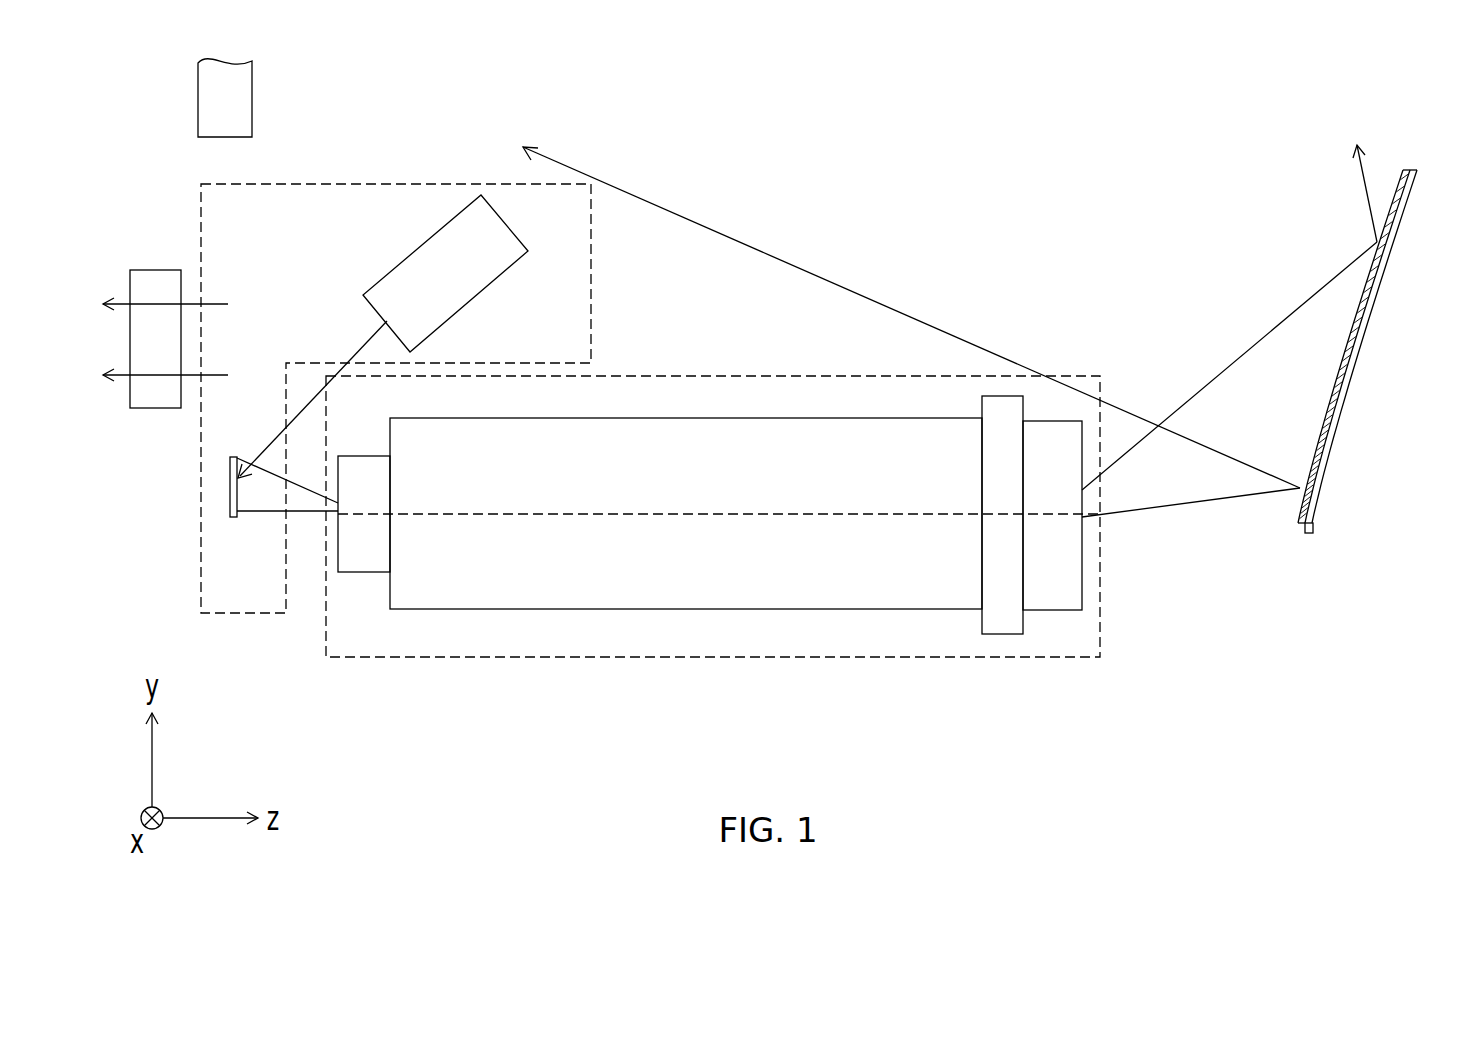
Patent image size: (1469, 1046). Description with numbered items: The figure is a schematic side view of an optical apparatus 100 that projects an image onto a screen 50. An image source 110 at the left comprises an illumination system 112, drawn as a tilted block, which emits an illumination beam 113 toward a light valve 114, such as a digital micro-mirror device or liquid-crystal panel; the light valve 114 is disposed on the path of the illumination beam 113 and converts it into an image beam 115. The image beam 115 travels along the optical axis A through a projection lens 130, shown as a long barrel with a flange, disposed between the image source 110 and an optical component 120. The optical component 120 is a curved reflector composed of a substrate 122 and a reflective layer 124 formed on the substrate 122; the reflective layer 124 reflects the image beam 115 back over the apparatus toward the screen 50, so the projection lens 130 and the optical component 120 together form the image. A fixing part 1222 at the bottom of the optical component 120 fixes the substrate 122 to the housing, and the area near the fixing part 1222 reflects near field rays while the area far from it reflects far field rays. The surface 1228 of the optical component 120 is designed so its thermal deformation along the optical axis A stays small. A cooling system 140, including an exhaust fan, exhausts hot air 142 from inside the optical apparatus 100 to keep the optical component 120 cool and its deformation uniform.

The optical apparatus 100 is at (1420, 790).
The screen 50 is at (235, 92).
The image source 110 is at (333, 183).
The illumination system 112 is at (472, 303).
The illumination beam 113 is at (367, 343).
The light valve 114 is at (232, 456).
The image beam 115 is at (280, 477).
The projection lens 130 is at (763, 418).
The optical axis A is at (855, 513).
The cooling system 140 is at (157, 268).
The hot air 142 is at (213, 303).
The optical component 120 is at (1342, 312).
The substrate 122 is at (1420, 176).
The reflective layer 124 is at (1408, 176).
The fixing part 1222 is at (1315, 528).
The surface 1228 is at (1325, 417).